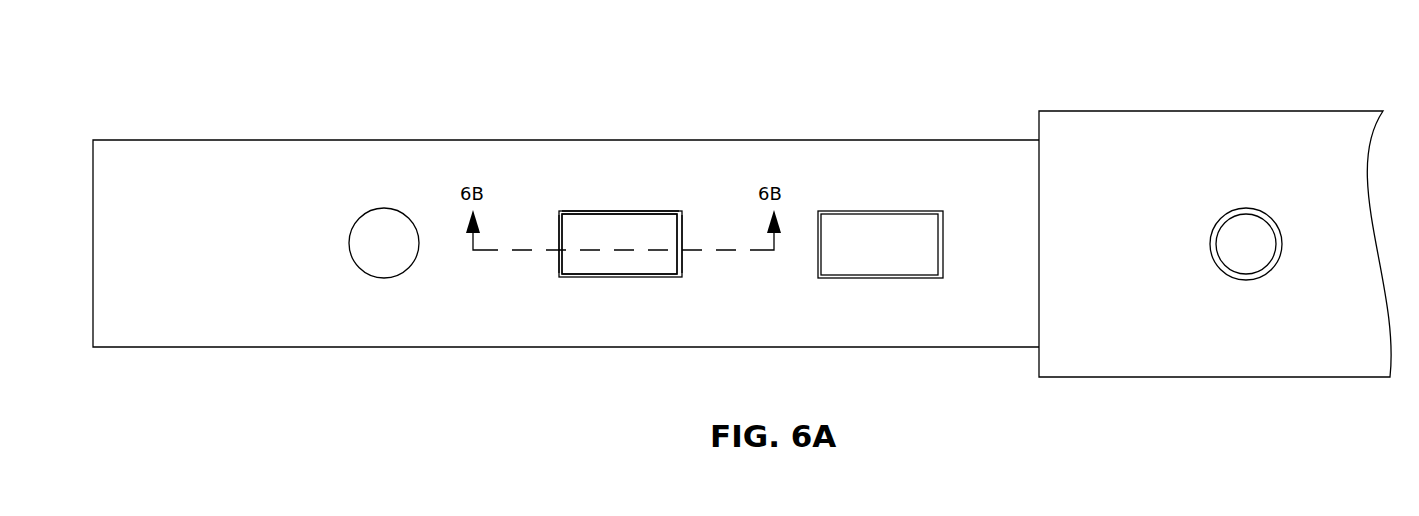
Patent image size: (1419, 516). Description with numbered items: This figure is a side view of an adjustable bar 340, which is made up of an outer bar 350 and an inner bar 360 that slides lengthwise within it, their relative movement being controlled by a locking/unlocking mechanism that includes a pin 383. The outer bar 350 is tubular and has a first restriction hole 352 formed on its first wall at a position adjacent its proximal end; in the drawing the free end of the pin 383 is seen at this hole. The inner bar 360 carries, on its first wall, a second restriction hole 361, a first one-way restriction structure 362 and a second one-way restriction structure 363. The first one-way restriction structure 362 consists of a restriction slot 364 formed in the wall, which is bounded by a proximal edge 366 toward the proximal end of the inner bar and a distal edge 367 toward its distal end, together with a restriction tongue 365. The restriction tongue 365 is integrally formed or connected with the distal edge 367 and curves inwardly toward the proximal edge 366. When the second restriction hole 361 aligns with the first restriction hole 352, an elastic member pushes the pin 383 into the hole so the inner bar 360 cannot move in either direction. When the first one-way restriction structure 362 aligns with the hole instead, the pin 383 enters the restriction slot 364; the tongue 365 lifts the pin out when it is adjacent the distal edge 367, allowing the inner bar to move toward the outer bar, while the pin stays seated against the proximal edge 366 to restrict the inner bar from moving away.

The adjustable bar 340 is at (272, 56).
The outer bar 350 is at (1085, 111).
The first restriction hole 352 is at (1222, 213).
The pin 383 is at (1246, 243).
The inner bar 360 is at (155, 140).
The second restriction hole 361 is at (383, 247).
The first one-way restriction structure 362 is at (598, 278).
The second one-way restriction structure 363 is at (908, 278).
The restriction slot 364 is at (642, 211).
The restriction tongue 365 is at (615, 230).
The proximal edge 366 is at (682, 235).
The distal edge 367 is at (559, 250).